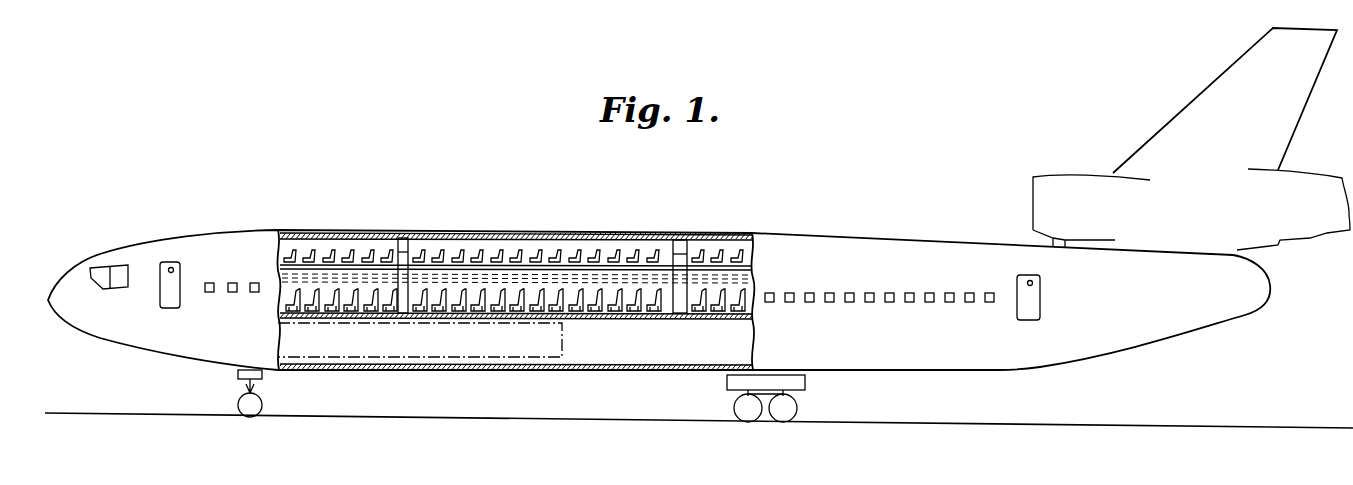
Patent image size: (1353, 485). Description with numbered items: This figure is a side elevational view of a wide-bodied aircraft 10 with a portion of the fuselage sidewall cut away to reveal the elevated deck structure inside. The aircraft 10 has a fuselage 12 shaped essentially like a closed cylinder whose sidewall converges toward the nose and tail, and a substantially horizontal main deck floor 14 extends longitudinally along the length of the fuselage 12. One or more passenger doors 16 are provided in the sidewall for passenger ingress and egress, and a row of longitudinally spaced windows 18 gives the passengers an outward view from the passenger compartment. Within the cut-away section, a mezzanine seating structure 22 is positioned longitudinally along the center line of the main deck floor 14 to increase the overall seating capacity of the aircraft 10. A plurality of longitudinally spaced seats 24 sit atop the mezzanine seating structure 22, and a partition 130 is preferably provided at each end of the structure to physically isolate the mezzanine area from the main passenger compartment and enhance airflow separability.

The wide-bodied aircraft 10 is at (183, 374).
The fuselage 12 is at (874, 368).
The main deck floor 14 is at (617, 320).
The passenger door 16 is at (179, 279).
The windows 18 is at (905, 292).
The mezzanine seating structure 22 is at (331, 272).
The seats 24 is at (555, 258).
The partition 130 is at (403, 238).